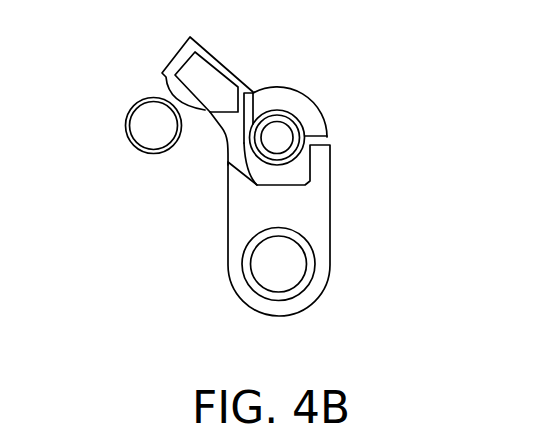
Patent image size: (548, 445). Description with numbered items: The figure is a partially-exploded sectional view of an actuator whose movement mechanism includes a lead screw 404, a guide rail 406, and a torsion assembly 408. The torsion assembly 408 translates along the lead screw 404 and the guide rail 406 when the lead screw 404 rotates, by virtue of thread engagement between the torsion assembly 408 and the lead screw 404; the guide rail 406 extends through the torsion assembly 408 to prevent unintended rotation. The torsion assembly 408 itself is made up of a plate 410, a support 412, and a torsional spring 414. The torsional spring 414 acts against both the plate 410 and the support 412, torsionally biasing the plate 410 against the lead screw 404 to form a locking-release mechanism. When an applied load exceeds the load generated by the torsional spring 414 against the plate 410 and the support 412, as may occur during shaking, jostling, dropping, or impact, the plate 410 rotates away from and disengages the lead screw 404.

The lead screw 404 is at (125, 129).
The guide rail 406 is at (250, 262).
The torsion assembly 408 is at (340, 102).
The plate 410 is at (178, 52).
The support 412 is at (330, 220).
The torsional spring 414 is at (262, 100).